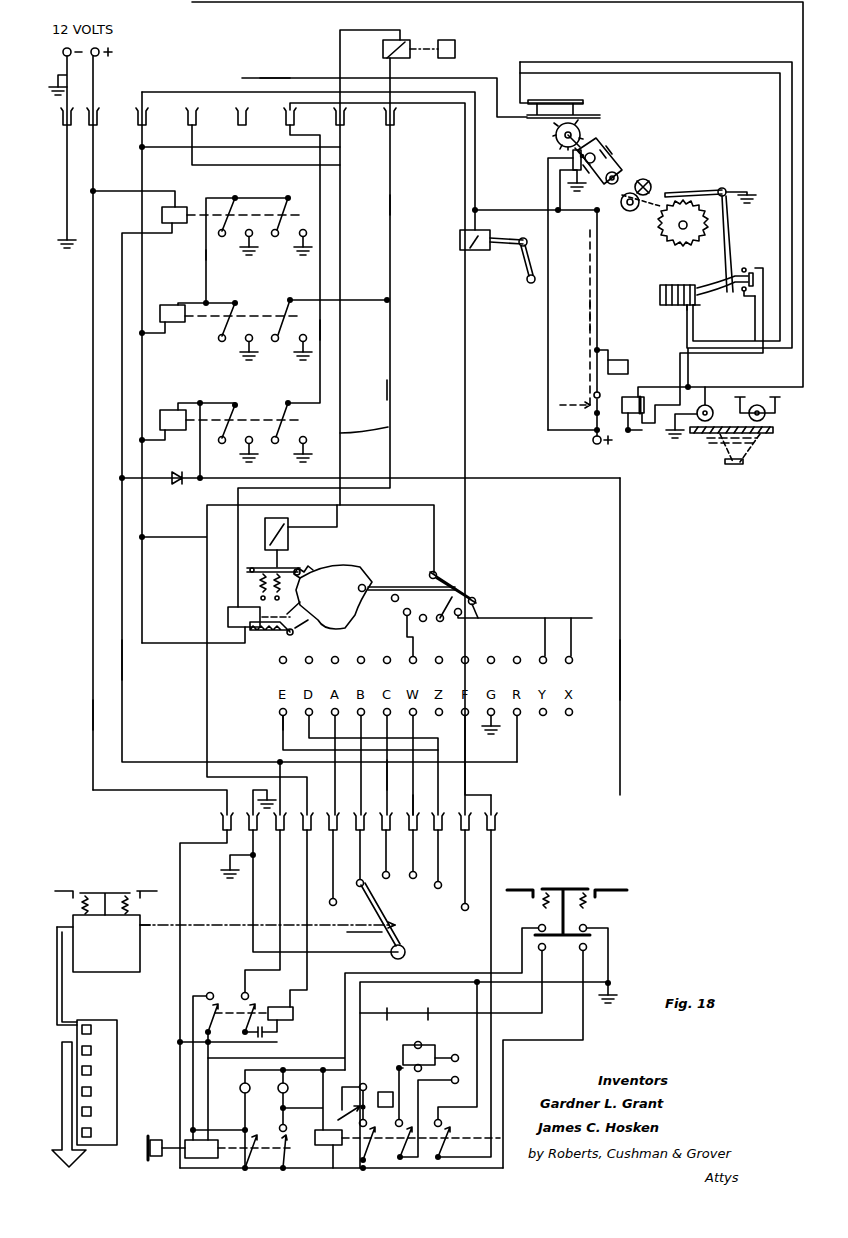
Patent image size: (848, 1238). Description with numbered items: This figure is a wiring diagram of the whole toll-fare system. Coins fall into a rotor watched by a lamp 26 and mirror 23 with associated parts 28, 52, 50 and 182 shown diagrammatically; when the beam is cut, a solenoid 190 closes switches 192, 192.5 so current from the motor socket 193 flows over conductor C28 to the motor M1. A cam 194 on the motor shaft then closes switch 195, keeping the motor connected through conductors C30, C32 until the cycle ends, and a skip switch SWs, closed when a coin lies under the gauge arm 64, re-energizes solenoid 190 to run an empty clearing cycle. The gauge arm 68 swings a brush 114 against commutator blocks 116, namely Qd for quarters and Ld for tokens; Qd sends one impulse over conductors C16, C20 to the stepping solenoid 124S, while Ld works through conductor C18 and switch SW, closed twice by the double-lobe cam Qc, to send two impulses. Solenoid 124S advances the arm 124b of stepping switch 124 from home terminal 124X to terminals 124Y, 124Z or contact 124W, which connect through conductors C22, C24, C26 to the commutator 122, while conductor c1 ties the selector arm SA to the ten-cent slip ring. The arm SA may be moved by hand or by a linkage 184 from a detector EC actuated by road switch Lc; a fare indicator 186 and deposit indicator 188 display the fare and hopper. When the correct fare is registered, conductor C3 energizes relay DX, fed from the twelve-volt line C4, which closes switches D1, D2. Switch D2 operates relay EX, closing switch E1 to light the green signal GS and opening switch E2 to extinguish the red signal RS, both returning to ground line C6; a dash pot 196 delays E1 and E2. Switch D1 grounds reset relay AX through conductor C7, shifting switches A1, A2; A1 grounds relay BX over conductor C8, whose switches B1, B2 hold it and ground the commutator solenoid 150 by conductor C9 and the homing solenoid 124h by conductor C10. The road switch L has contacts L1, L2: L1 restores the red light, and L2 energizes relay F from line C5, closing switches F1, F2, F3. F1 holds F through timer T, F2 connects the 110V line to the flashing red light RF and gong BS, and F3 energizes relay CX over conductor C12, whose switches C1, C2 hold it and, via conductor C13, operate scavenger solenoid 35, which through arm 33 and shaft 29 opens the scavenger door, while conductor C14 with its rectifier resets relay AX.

The commutator solenoid 150 is at (402, 46).
The switch SW is at (530, 46).
The conductor C20 is at (300, 77).
The conductor C9 is at (390, 205).
The double lobe cam Qc is at (555, 135).
The normally open switch 195 is at (565, 157).
The cam 194 is at (597, 160).
The motor M1 is at (615, 165).
The conductor C32 is at (505, 203).
The arm 64 is at (684, 193).
The skip switch SWs is at (770, 180).
The conductor C18 is at (792, 118).
The conductor C16 is at (780, 140).
The gauge arm 68 is at (737, 272).
The arrow 182 is at (599, 218).
The switch 192.5 is at (657, 232).
The commutator blocks 116 is at (659, 276).
The brush 114 is at (702, 311).
The scavenger solenoid 35 is at (467, 250).
The arm 33 is at (523, 266).
The shaft 29 is at (527, 290).
The commutator block Ld is at (686, 305).
The commutator block Qd is at (696, 306).
The conductor C30 is at (547, 352).
The conductor C28 is at (589, 327).
The switch 192 is at (554, 409).
The motor socket 193 is at (592, 441).
The solenoid 190 is at (642, 416).
The lead 52 is at (630, 352).
The relay 50 is at (630, 364).
The roller 28 is at (709, 405).
The lamp 26 is at (762, 405).
The mirror 23 is at (735, 465).
The reset relay AX is at (172, 207).
The switch A1 is at (243, 211).
The switch A2 is at (276, 226).
The relay BX is at (172, 306).
The switch B1 is at (242, 313).
The switch B2 is at (276, 320).
The relay CX is at (172, 410).
The switch C1 is at (243, 413).
The switch C2 is at (572, 610).
The conductor C8 is at (205, 254).
The conductor C13 is at (322, 328).
The conductor C10 is at (388, 392).
The conductor C14 is at (167, 486).
The conductor C3 is at (402, 502).
The conductor C7 is at (119, 656).
The conductor C4 is at (91, 712).
The conductor C12 is at (621, 673).
The conductor C22 is at (524, 632).
The conductor C24 is at (387, 777).
The conductor C26 is at (413, 805).
The conductor c1 is at (362, 724).
The ground line C6 is at (300, 1058).
The line C5 is at (340, 1170).
The stepping switch 124 is at (186, 603).
The homing switch solenoid 124h is at (240, 630).
The actuating solenoid 124S is at (292, 530).
The stepping switch arm 124b is at (447, 566).
The commutator 122 is at (398, 571).
The terminal 124Z is at (463, 598).
The terminal 124X is at (472, 592).
The terminal 124Y is at (482, 610).
The contact 124W is at (402, 614).
The fare selector arm SA is at (376, 920).
The linkage 184 is at (236, 924).
The road switch Lc is at (106, 880).
The detector EC is at (103, 943).
The fare indicator 186 is at (118, 1030).
The deposit indicator 188 is at (72, 1160).
The dash pot 196 is at (146, 1137).
The relay EX is at (201, 1149).
The switch D1 is at (260, 1007).
The switch D2 is at (230, 1059).
The relay DX is at (280, 1013).
The road switch L is at (493, 1016).
The contact L1 is at (598, 928).
The contact L2 is at (599, 949).
The flashing red light RF is at (398, 1068).
The gong BS is at (419, 1044).
The 110 volt line 110V is at (438, 1106).
The timer T is at (385, 1092).
The relay F is at (391, 1117).
The switch F1 is at (359, 1149).
The switch F2 is at (394, 1146).
The switch F3 is at (453, 1143).
The signal device GS is at (236, 1120).
The signal device RS is at (272, 1099).
The switch E1 is at (237, 1140).
The switch E2 is at (254, 1141).